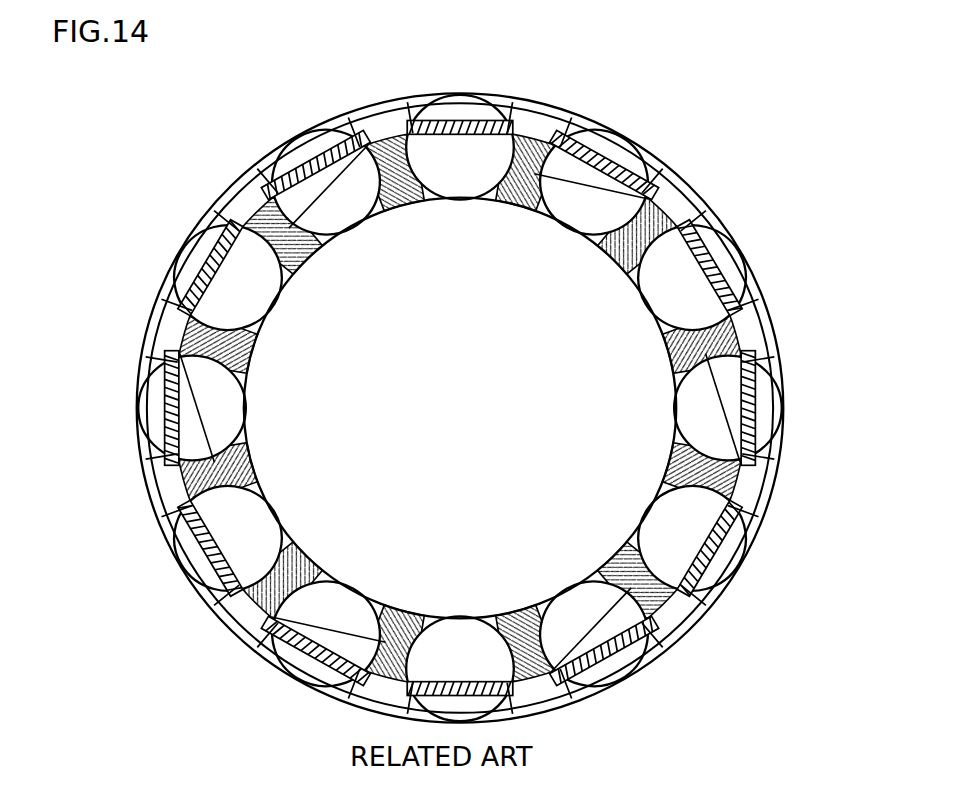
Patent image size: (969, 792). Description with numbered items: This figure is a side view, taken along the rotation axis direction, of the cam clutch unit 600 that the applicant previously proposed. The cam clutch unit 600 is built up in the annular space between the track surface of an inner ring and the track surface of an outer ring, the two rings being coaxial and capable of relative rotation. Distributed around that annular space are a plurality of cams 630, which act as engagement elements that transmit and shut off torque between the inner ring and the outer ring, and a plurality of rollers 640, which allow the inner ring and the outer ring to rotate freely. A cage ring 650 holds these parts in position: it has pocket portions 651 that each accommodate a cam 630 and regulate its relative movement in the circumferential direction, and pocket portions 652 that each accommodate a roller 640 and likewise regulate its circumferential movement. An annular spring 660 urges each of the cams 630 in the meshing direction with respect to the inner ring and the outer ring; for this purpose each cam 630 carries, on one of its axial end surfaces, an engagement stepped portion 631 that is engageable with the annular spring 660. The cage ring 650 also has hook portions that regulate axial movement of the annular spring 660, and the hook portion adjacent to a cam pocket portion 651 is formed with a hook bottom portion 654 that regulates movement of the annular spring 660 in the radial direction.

The cam clutch unit 600 is at (188, 111).
The cam 630 is at (322, 193).
The engagement stepped portion 631 is at (312, 150).
The roller 640 is at (455, 108).
The cage ring 650 is at (224, 210).
The pocket portion 651 is at (660, 167).
The pocket portion 652 is at (495, 100).
The hook bottom portion 654 is at (745, 334).
The annular spring 660 is at (718, 262).